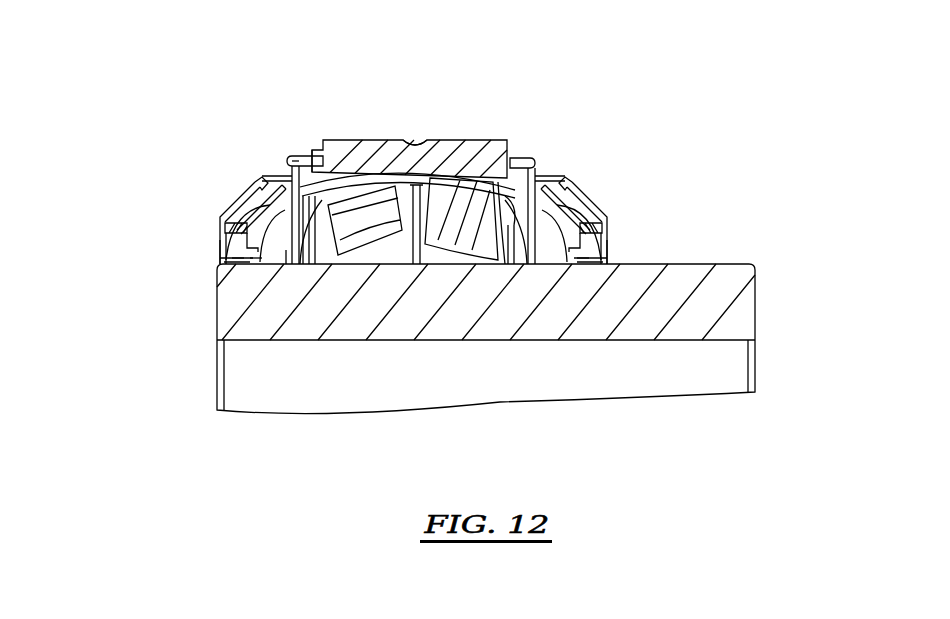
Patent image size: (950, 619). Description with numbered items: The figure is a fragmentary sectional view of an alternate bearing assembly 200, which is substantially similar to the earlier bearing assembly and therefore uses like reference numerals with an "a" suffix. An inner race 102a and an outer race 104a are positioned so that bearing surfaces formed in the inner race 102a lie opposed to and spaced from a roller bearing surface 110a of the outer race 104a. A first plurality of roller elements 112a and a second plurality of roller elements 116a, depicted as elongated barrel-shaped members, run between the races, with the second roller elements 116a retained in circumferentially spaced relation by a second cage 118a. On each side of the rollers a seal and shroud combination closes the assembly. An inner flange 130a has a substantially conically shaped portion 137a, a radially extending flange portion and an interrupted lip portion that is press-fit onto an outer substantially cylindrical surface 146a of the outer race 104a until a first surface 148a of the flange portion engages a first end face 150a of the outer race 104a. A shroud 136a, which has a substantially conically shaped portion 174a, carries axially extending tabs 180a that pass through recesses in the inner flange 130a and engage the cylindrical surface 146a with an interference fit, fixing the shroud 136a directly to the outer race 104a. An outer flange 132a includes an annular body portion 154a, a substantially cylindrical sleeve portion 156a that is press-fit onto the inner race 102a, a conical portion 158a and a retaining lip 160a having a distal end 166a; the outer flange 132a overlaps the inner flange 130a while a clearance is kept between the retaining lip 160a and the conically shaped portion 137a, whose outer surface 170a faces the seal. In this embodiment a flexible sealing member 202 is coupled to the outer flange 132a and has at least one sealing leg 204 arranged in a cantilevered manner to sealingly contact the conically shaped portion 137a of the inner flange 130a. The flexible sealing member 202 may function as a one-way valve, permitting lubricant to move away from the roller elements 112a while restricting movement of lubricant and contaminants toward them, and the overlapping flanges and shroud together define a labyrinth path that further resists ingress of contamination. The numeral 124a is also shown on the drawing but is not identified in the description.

The bearing assembly 200 is at (120, 97).
The inner race 102a is at (757, 315).
The outer race 104a is at (387, 112).
The roller bearing surface 110a is at (520, 245).
The first plurality of roller elements 112a is at (420, 264).
The second plurality of roller elements 116a is at (322, 257).
The second cage 118a is at (387, 264).
The seal case 124a is at (557, 160).
The inner flange 130a is at (255, 188).
The outer flange 132a is at (217, 257).
The shroud 136a is at (283, 147).
The substantially conically shaped portion 137a is at (287, 252).
The outer substantially cylindrical surface 146a is at (325, 150).
The first surface 148a is at (500, 162).
The first end face 150a is at (285, 183).
The annular body portion 154a is at (220, 243).
The substantially cylindrical sleeve portion 156a is at (238, 266).
The conical portion 158a is at (592, 198).
The retaining lip 160a is at (328, 228).
The distal end 166a is at (292, 266).
The outer surface 170a is at (238, 218).
The substantially conically shaped portion 174a is at (246, 190).
The axially extending tabs 180a is at (296, 154).
The flexible sealing member 202 is at (223, 228).
The sealing leg 204 is at (258, 264).